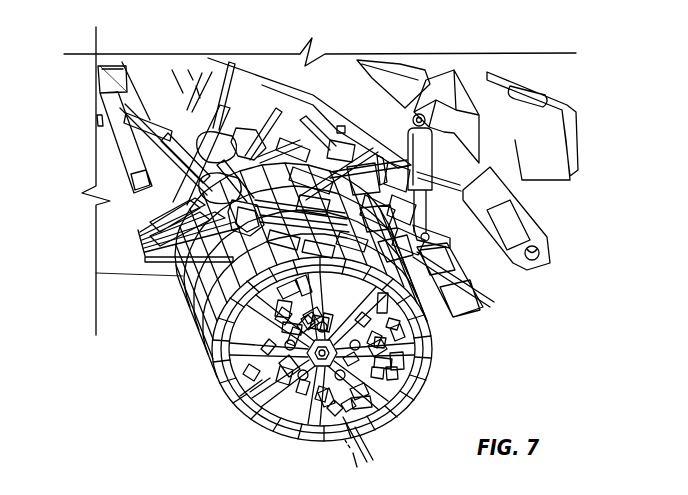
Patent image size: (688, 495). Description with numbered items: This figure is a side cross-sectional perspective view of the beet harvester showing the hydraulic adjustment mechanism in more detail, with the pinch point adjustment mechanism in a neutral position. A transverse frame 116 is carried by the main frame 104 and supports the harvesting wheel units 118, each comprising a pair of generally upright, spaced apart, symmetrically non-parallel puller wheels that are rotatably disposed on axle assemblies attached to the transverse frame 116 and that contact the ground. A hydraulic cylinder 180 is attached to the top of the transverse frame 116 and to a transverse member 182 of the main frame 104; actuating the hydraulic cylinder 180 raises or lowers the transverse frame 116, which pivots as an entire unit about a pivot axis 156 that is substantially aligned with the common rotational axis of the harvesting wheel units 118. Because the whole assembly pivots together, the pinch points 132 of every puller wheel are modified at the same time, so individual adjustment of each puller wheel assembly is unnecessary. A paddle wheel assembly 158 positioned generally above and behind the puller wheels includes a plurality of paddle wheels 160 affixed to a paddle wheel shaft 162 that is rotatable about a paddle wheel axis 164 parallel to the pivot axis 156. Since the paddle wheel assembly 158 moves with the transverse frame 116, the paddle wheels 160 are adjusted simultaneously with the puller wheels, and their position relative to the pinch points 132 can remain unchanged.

The main frame 104 is at (343, 51).
The transverse frame 116 is at (473, 317).
The harvesting wheel unit 118 is at (276, 310).
The pinch point 132 is at (252, 433).
The pivot axis 156 is at (170, 86).
The paddle wheel assembly 158 is at (162, 286).
The paddle wheel 160 is at (143, 258).
The paddle wheel shaft 162 is at (186, 311).
The paddle wheel axis 164 is at (170, 86).
The hydraulic cylinder 180 is at (420, 155).
The transverse member 182 is at (461, 97).